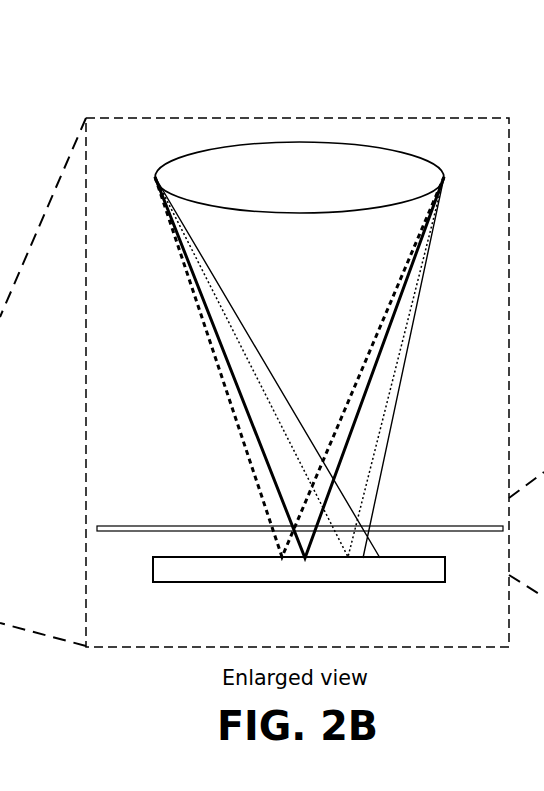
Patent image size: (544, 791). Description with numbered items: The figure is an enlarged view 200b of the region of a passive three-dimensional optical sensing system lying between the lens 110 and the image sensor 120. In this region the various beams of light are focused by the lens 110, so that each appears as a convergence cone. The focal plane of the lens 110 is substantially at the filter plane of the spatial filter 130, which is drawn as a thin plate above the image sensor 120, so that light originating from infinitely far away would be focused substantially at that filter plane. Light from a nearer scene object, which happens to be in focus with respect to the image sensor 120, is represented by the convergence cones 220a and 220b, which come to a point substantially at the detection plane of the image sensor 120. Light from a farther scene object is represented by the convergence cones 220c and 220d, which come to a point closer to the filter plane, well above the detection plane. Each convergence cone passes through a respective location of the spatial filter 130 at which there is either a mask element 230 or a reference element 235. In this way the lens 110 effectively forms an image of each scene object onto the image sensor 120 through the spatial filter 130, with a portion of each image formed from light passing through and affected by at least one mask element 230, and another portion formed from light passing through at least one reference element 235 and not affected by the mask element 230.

The enlarged view of passive 3D optical sensing system 200b is at (178, 73).
The lens 110 is at (299, 177).
The convergence cone 220a is at (226, 389).
The convergence cone 220b is at (251, 421).
The convergence cone 220c is at (390, 383).
The convergence cone 220d is at (394, 438).
The spatial filter 130 is at (192, 527).
The image sensor 120 is at (178, 573).
The mask element 230 is at (350, 530).
The reference element 235 is at (366, 533).